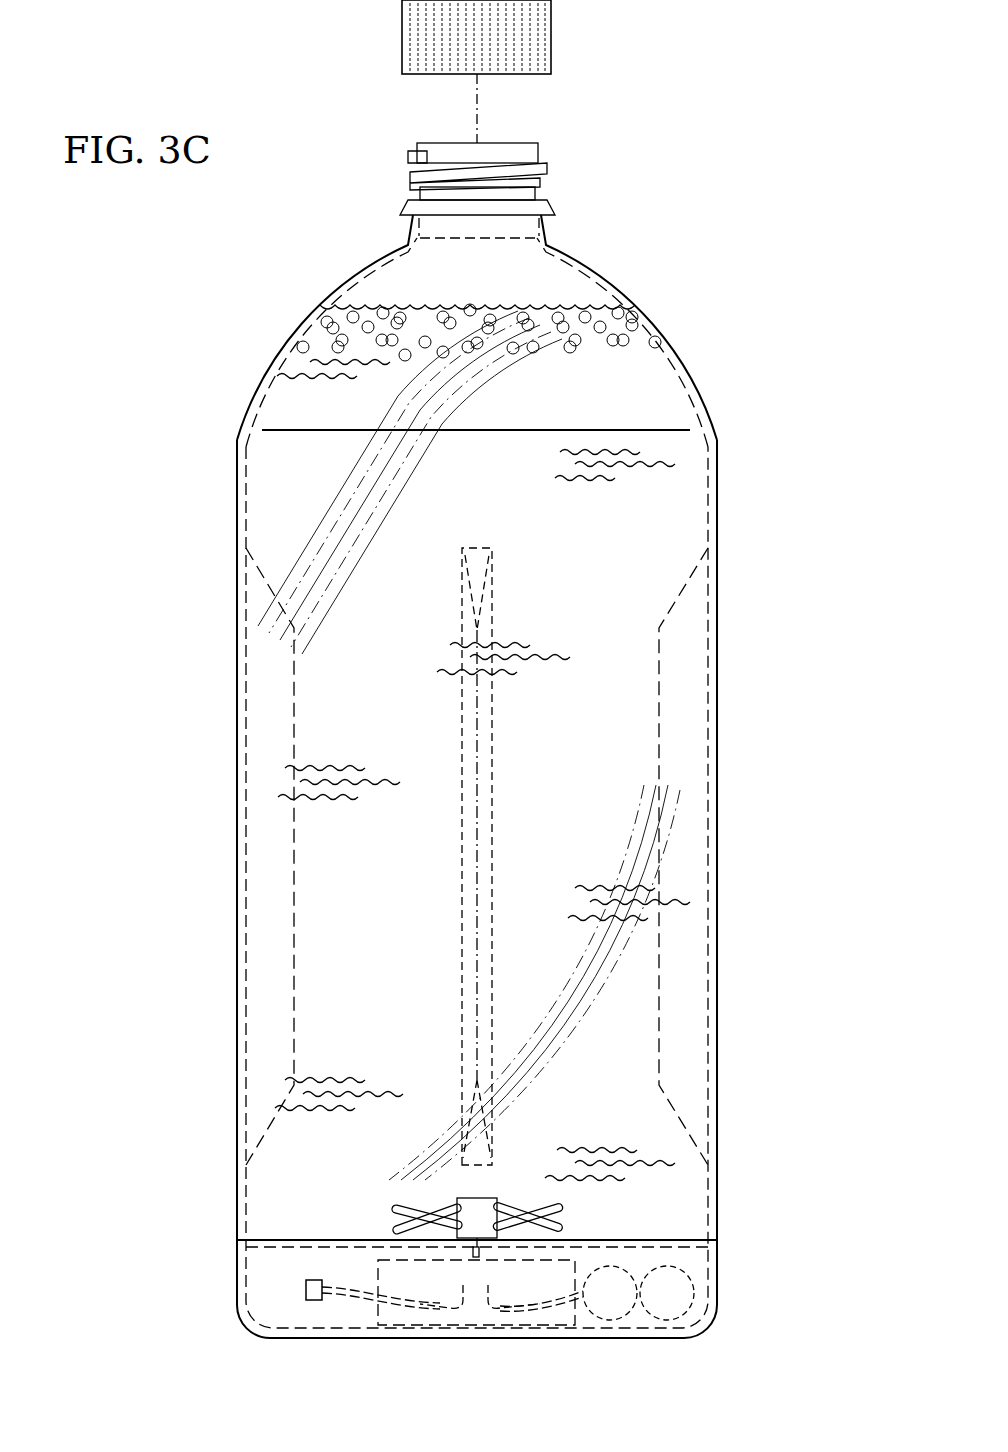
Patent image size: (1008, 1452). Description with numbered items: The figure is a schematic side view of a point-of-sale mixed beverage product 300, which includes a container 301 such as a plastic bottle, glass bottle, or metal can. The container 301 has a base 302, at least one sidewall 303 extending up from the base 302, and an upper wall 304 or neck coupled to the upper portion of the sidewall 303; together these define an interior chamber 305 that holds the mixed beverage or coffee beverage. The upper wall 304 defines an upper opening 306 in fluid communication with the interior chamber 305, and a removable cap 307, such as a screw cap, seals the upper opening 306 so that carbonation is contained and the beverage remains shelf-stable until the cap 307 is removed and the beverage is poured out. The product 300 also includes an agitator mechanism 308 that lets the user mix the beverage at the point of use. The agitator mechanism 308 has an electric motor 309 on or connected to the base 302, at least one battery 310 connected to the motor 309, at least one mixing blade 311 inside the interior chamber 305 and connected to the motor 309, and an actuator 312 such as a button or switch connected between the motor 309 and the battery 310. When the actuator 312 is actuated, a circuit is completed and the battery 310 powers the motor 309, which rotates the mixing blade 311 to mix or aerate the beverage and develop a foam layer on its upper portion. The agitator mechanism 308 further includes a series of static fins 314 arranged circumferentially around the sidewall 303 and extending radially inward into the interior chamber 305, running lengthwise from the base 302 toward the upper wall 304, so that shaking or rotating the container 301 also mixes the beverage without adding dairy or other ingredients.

The point-of-sale mixed beverage product 300 is at (742, 252).
The container 301 is at (730, 746).
The base 302 is at (617, 1340).
The sidewall 303 is at (717, 953).
The upper wall 304 is at (590, 255).
The interior chamber 305 is at (633, 538).
The upper opening 306 is at (520, 141).
The removable cap 307 is at (537, 36).
The agitator mechanism 308 is at (558, 1182).
The electric motor 309 is at (475, 1315).
The battery 310 is at (610, 1293).
The mixing blade 311 is at (390, 1213).
The actuator 312 is at (306, 1289).
The fins 314 is at (477, 742).